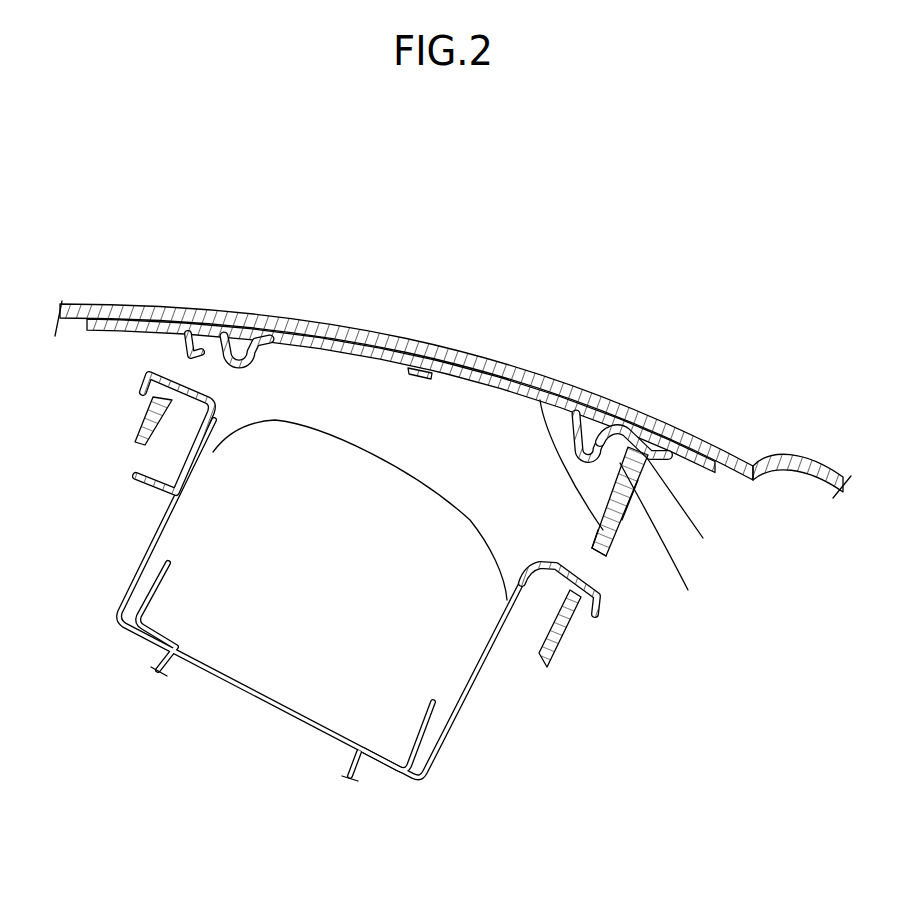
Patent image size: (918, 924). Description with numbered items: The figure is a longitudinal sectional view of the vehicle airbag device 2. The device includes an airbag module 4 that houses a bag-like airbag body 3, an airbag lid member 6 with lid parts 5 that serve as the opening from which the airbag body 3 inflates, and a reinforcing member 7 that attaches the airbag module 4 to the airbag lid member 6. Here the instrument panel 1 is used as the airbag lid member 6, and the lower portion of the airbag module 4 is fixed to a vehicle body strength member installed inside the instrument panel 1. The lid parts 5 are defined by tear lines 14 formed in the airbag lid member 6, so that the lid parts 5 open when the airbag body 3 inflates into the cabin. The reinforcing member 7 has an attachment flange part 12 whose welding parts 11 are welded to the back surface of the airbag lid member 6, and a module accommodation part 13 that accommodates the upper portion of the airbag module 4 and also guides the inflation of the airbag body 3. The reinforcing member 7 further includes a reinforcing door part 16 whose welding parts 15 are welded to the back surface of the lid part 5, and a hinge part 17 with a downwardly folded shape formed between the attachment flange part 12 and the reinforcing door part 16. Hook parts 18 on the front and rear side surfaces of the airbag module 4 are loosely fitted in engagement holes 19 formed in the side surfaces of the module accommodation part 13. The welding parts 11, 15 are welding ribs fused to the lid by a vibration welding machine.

The instrument panel 1 is at (541, 199).
The vehicle airbag device 2 is at (655, 789).
The airbag body 3 is at (427, 484).
The airbag module 4 is at (433, 755).
The lid parts 5 is at (318, 322).
The airbag lid member 6 is at (85, 304).
The reinforcing member 7 is at (740, 523).
The welding parts 11 is at (122, 306).
The attachment flange part 12 is at (676, 468).
The module accommodation part 13 is at (612, 556).
The tear lines 14 is at (200, 324).
The welding parts 15 is at (355, 343).
The reinforcing door part 16 is at (622, 527).
The hinge part 17 is at (632, 500).
The hook parts 18 is at (600, 560).
The engagement holes 19 is at (606, 562).